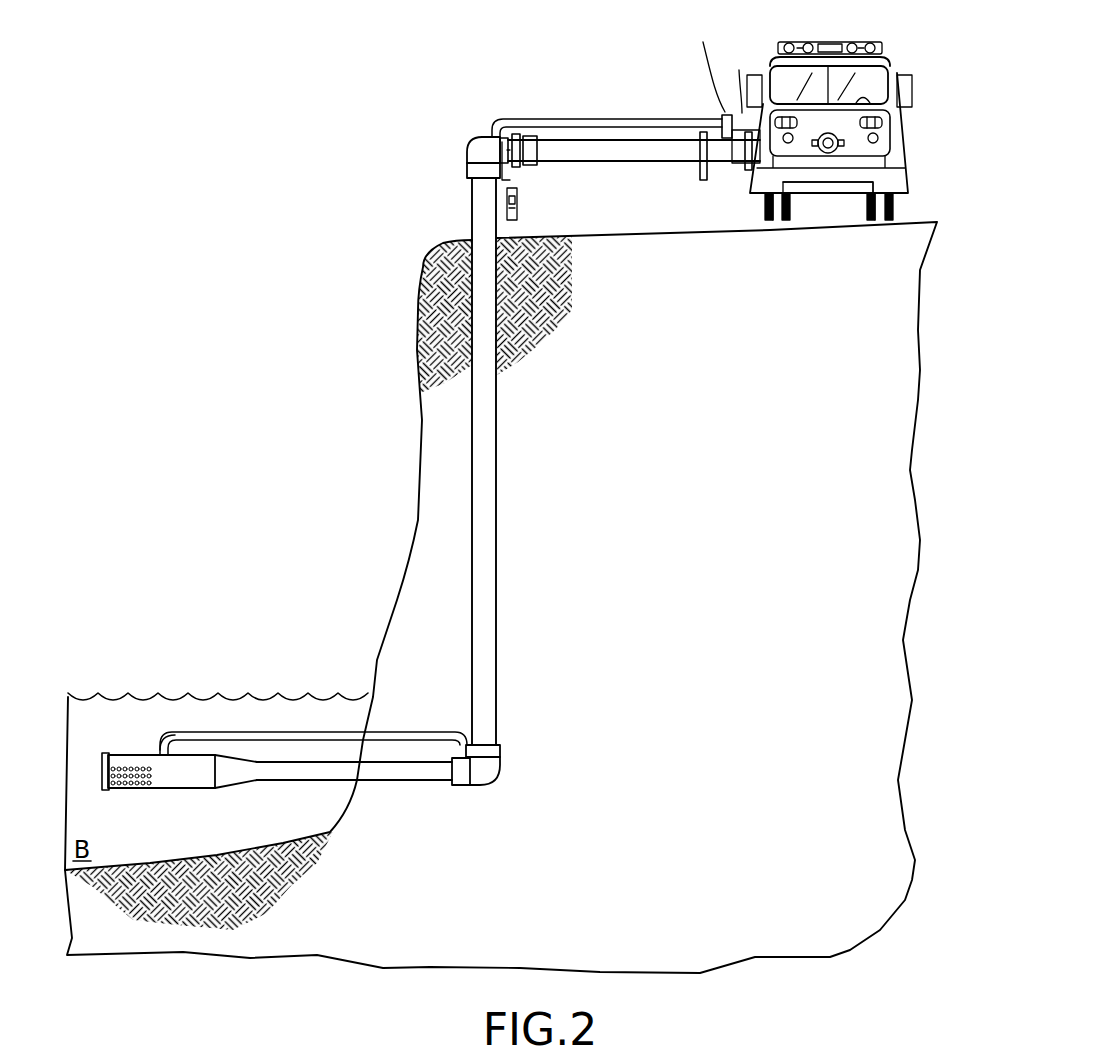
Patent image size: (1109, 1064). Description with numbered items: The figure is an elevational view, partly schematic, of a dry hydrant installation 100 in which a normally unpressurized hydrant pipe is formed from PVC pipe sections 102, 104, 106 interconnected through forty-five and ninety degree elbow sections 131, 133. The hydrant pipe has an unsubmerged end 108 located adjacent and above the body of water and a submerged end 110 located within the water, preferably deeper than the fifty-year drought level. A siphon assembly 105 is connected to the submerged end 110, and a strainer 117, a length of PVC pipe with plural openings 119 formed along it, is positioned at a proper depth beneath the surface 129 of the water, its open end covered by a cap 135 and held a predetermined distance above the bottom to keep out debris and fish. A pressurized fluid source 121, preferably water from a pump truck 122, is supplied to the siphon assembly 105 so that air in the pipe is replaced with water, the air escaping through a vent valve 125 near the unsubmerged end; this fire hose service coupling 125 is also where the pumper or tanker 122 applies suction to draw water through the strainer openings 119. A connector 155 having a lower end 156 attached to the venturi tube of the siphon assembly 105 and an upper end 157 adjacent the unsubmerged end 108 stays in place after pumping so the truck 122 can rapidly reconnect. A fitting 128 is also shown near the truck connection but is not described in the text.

The dry hydrant installation 100 is at (527, 757).
The pipe section 102 is at (410, 781).
The pipe section 104 is at (492, 537).
The siphon assembly 105 is at (152, 776).
The pipe section 106 is at (593, 157).
The unsubmerged end 108 is at (688, 162).
The submerged end 110 is at (265, 782).
The strainer 117 is at (130, 768).
The strainer openings 119 is at (130, 788).
The pressurized fluid source 121 is at (742, 78).
The pump truck 122 is at (824, 242).
The vent valve 125 is at (720, 108).
The coupling 128 is at (756, 180).
The surface 129 is at (222, 695).
The elbow section 131 is at (484, 771).
The elbow section 133 is at (478, 150).
The cap 135 is at (100, 768).
The connector 155 is at (525, 118).
The lower end 156 is at (176, 746).
The upper end 157 is at (701, 65).